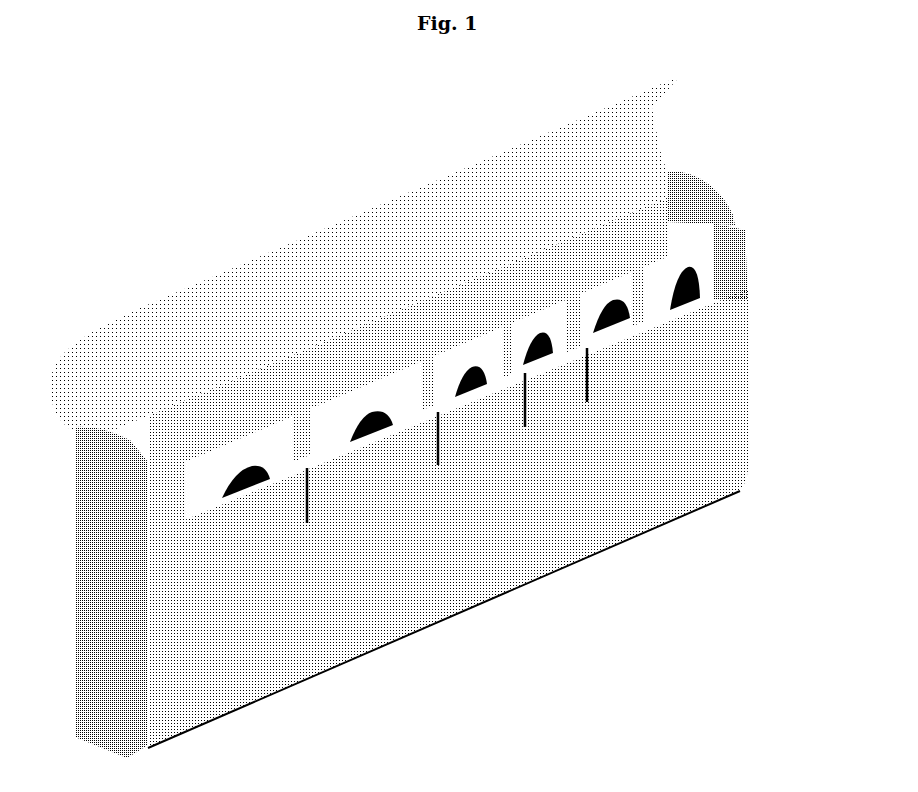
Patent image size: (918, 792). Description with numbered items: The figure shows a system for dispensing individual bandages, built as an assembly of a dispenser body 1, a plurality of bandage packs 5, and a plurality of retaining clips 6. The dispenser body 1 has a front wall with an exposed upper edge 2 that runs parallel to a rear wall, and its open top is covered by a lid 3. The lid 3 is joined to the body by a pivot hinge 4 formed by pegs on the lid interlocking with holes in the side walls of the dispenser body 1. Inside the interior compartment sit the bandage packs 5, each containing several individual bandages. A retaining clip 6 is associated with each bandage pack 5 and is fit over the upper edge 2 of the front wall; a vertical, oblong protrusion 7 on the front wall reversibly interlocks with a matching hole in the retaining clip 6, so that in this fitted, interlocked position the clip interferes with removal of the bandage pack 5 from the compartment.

The dispenser body 1 is at (725, 443).
The upper edge 2 is at (733, 300).
The lid 3 is at (675, 90).
The hinge 4 is at (675, 175).
The bandage pack 5 is at (715, 247).
The retaining clip 6 is at (645, 372).
The vertical, oblong protrusion 7 is at (707, 338).